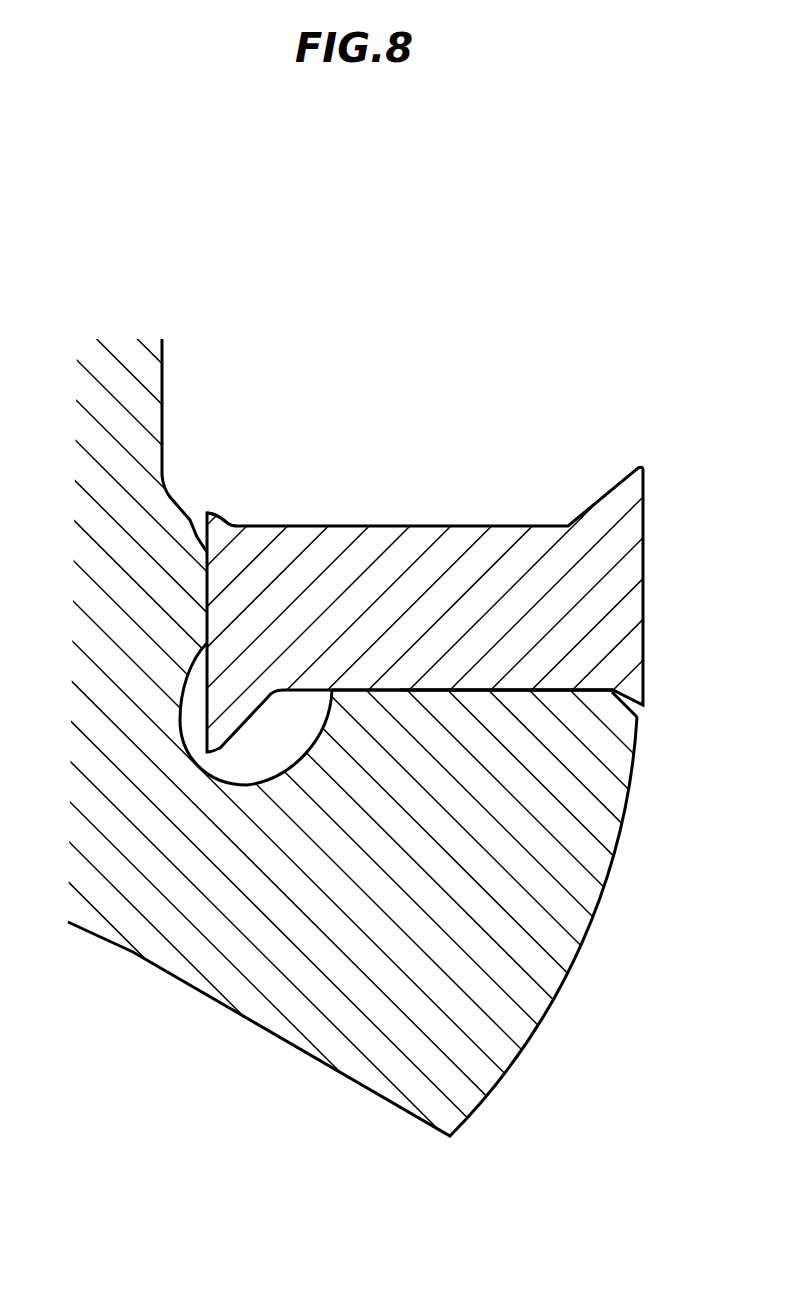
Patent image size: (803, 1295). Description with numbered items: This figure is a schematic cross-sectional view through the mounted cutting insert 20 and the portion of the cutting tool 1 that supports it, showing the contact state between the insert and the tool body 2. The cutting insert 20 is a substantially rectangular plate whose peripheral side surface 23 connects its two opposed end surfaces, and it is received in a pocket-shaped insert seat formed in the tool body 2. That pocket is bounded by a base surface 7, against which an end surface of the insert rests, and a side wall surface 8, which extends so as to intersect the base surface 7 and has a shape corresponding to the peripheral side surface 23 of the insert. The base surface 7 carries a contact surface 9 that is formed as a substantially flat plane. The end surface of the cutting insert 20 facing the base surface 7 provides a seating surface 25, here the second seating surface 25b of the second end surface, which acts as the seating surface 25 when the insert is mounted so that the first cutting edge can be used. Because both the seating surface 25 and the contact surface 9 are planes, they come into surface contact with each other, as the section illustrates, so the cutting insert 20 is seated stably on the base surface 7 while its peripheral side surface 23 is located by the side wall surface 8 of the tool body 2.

The cutting tool 1 is at (102, 520).
The tool body 2 is at (130, 547).
The base surface 7 is at (427, 692).
The side wall surface 8 is at (207, 587).
The contact surface 9 is at (510, 692).
The cutting insert 20 is at (393, 600).
The peripheral side surface 23 is at (210, 573).
The seating surface 25 is at (407, 690).
The second seating surface 25b is at (483, 690).